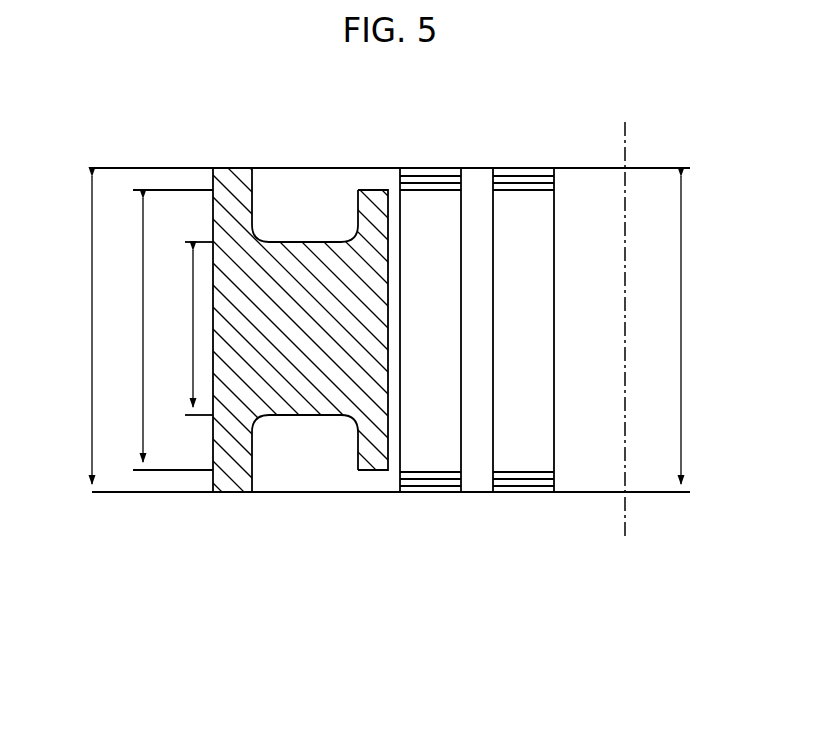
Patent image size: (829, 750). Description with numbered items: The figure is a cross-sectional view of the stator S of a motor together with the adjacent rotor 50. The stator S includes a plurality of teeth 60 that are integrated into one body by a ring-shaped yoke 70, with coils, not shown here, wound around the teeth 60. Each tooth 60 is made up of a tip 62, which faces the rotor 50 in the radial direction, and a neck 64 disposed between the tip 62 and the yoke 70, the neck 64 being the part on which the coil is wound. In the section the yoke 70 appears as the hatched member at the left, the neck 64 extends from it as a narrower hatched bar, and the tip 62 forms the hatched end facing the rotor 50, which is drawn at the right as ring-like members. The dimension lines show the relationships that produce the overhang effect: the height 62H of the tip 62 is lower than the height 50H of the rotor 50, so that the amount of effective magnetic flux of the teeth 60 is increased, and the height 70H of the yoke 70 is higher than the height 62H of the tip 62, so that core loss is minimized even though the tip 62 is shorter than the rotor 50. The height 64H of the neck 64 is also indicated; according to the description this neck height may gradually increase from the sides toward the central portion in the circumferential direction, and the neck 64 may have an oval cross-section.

The stator S is at (353, 414).
The rotor 50 is at (430, 478).
The tooth 60 is at (353, 385).
The tip 62 is at (373, 458).
The neck 64 is at (302, 400).
The yoke 70 is at (238, 476).
The height of the rotor 50H is at (702, 330).
The height of the tip 62H is at (156, 330).
The height of the neck 64H is at (181, 328).
The height of the yoke 70H is at (70, 330).